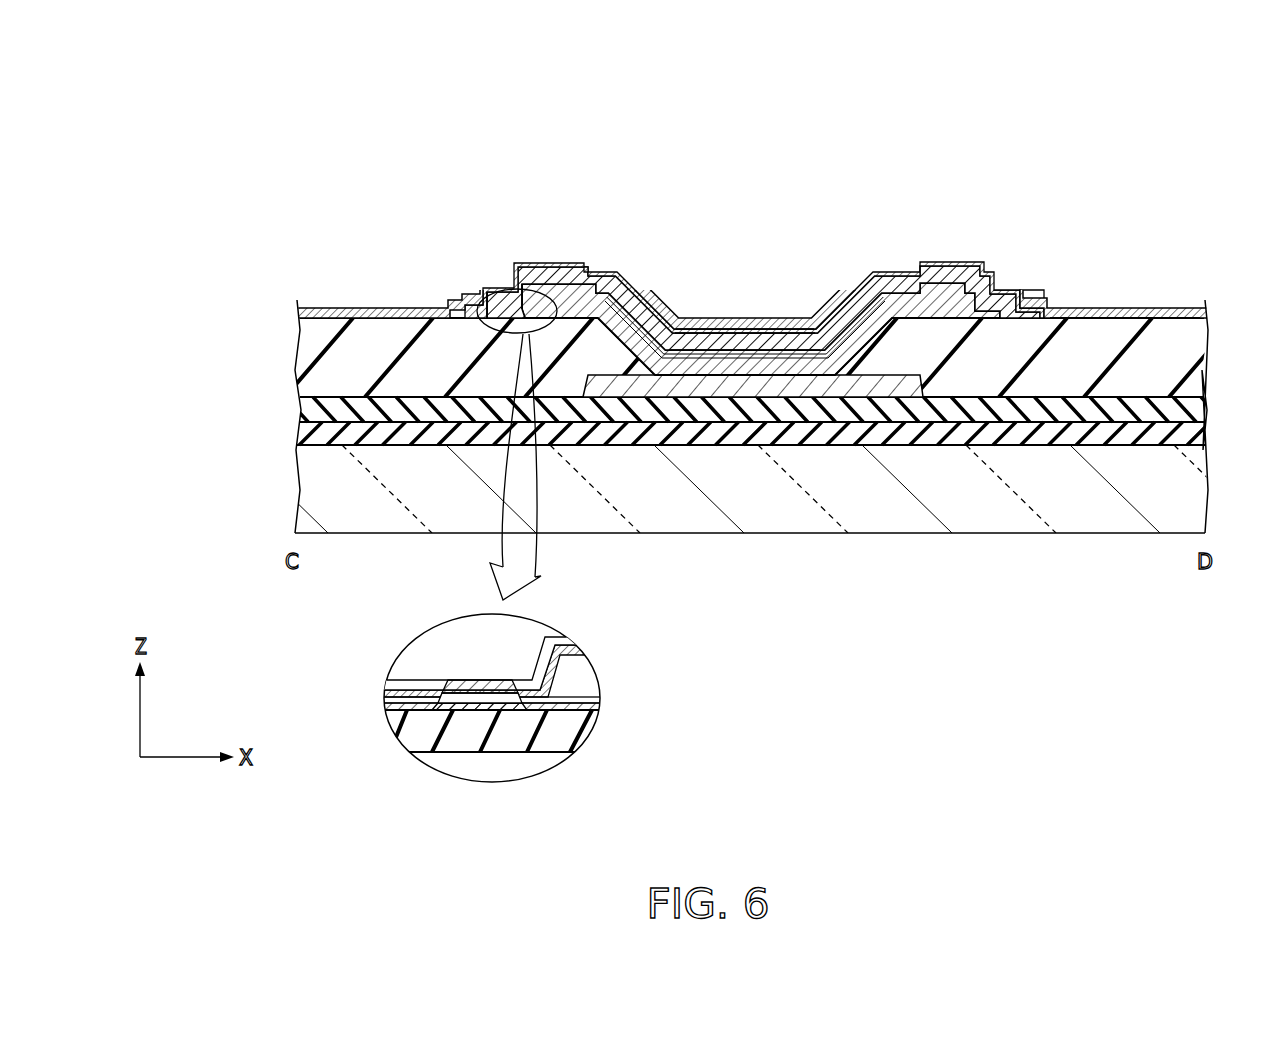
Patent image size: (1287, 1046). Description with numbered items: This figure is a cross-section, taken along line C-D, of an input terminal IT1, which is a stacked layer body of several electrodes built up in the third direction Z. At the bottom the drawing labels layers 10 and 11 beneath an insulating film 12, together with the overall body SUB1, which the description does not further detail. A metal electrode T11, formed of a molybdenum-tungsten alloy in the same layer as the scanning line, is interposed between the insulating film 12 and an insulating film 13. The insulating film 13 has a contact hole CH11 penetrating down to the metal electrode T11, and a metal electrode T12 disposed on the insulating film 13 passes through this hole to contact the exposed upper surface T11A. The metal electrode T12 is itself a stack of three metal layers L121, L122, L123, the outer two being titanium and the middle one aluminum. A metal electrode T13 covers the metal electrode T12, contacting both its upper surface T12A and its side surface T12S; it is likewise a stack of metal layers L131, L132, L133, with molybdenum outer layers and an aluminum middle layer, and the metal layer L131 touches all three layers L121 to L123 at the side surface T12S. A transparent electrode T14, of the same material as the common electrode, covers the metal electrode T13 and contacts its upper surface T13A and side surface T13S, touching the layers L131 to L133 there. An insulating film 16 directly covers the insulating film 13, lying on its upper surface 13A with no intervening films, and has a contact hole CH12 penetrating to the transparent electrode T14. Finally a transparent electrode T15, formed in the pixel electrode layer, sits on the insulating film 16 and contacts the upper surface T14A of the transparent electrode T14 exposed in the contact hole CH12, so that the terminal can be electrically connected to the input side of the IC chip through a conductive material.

The input terminal IT1 is at (946, 154).
The metal electrode T11 is at (897, 388).
The metal electrode T12 is at (940, 306).
The metal electrode T13 is at (975, 298).
The transparent electrode T14 is at (1013, 297).
The transparent electrode T15 is at (1038, 294).
The upper surface of insulating film 13 13A is at (1136, 312).
The insulating film 16 is at (1200, 313).
The insulating film 13 is at (1195, 348).
The insulating film 12 is at (1198, 404).
The insulating layer 11 is at (1198, 432).
The substrate 10 is at (1198, 487).
The contact hole CH12 is at (580, 253).
The contact hole CH11 is at (650, 358).
The side surface of metal electrode T12 T12S is at (520, 296).
The side surface of metal electrode T13 T13S is at (485, 298).
The upper surface of metal electrode T11 T11A is at (705, 362).
The upper surface of metal electrode T12 T12A is at (740, 342).
The upper surface of metal electrode T13 T13A is at (777, 325).
The upper surface of transparent electrode T14 T14A is at (809, 314).
The substrate assembly SUB1 is at (298, 588).
The metal layer L121 is at (590, 711).
The metal layer L122 is at (590, 696).
The metal layer L123 is at (582, 681).
The metal layer L131 is at (441, 714).
The metal layer L132 is at (470, 699).
The metal layer L133 is at (497, 684).